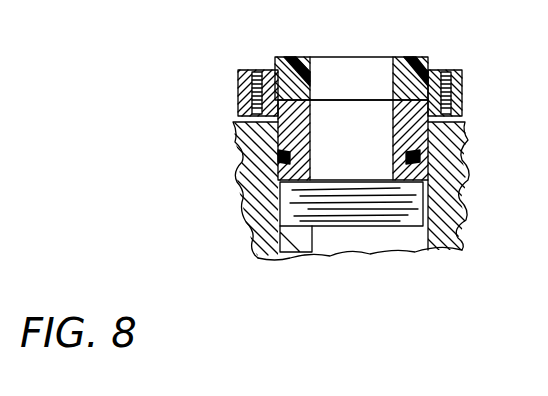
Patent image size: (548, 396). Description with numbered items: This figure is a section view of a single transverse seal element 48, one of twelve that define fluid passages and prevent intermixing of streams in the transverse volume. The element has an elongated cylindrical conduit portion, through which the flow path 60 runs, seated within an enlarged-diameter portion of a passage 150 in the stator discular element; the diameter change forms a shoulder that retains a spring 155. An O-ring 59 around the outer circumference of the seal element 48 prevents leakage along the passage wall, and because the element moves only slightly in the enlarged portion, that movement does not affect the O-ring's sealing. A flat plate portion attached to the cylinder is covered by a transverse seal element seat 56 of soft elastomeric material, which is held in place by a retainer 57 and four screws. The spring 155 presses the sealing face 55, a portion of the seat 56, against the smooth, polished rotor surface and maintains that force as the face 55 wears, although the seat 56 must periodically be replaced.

The transverse seal element 48 is at (292, 58).
The sealing face 55 is at (413, 57).
The transverse seal element seat 56 is at (239, 86).
The retainer 57 is at (238, 74).
The O-ring 59 is at (440, 153).
The flow path 60 is at (374, 141).
The passage 150 is at (337, 242).
The spring 155 is at (352, 228).